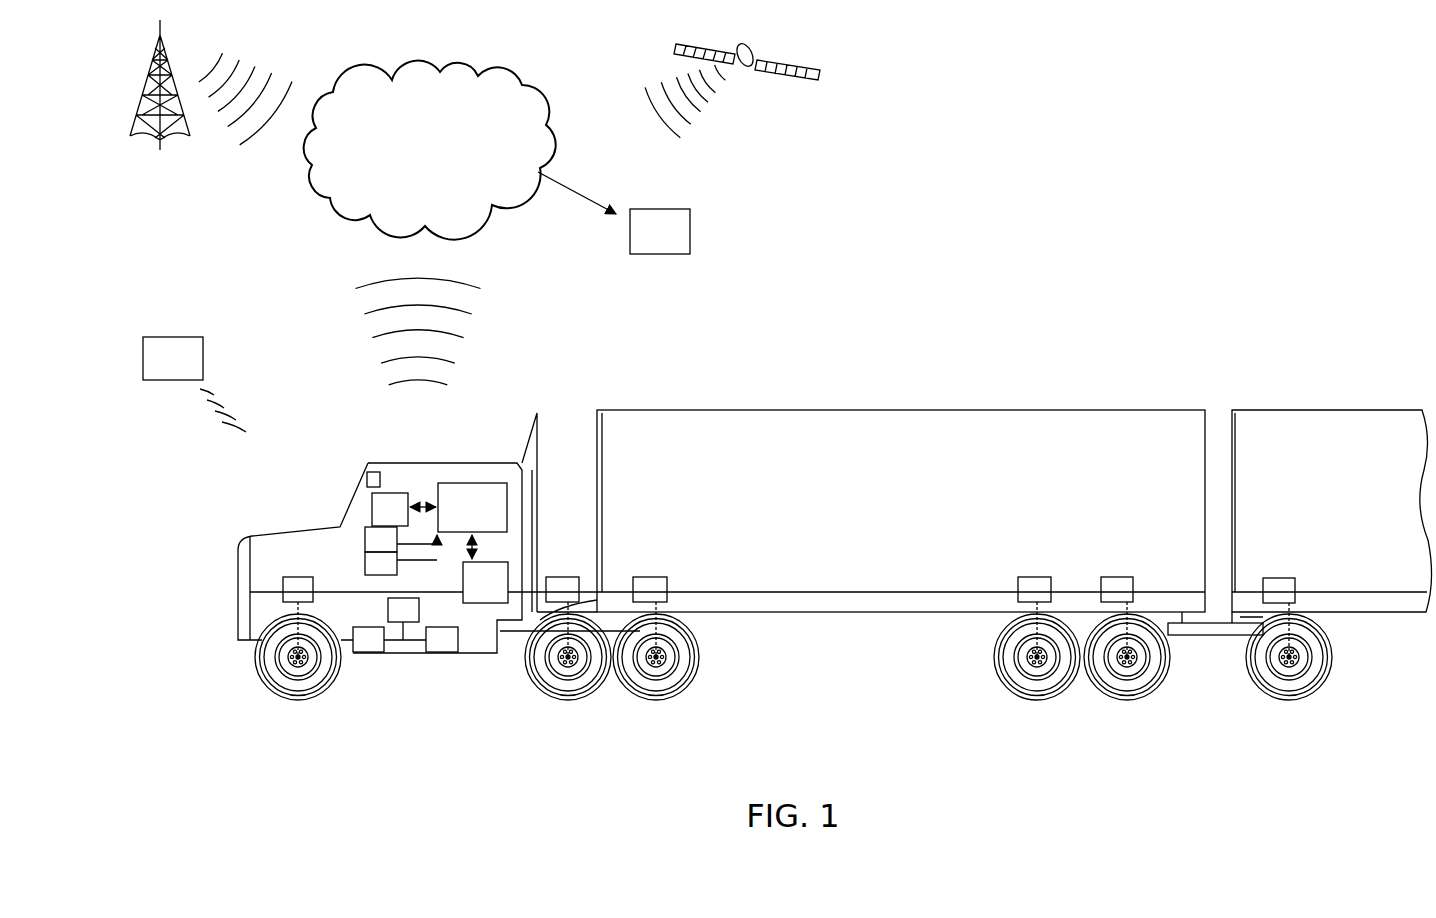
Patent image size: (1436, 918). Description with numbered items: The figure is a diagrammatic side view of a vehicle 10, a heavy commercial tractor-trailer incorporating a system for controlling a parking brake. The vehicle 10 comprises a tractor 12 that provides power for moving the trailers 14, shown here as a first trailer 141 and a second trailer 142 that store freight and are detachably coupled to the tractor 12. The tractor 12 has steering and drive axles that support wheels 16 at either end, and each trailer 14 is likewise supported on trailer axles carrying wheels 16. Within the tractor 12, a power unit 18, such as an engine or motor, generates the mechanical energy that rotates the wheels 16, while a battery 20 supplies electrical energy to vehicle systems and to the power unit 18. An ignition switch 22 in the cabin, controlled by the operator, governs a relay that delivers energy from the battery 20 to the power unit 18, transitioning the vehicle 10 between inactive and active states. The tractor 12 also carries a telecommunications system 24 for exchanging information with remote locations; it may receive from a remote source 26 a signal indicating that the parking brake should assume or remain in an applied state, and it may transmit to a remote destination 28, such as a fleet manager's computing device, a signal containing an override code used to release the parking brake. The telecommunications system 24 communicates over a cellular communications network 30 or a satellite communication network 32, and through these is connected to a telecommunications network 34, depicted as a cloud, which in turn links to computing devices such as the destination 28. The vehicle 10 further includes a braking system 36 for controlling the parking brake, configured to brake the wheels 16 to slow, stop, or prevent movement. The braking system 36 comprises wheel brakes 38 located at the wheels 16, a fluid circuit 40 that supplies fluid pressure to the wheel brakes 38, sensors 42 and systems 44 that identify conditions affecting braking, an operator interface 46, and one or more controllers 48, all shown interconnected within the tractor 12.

The vehicle 10 is at (370, 430).
The tractor 12 is at (273, 533).
The trailer 14 is at (1014, 519).
The first trailer 141 is at (705, 428).
The second trailer 142 is at (1305, 428).
The wheel 16 is at (317, 674).
The power unit 18 is at (440, 647).
The battery 20 is at (372, 645).
The ignition switch 22 is at (405, 612).
The telecommunications system 24 is at (367, 478).
The source 26 is at (142, 350).
The destination 28 is at (683, 243).
The cellular communications network 30 is at (146, 98).
The satellite communication network 32 is at (756, 59).
The telecommunications network 34 is at (345, 187).
The braking system 36 is at (549, 511).
The wheel brake 38 is at (283, 587).
The fluid circuit 40 is at (487, 606).
The sensor 42 is at (378, 538).
The system 44 is at (378, 567).
The operator interface 46 is at (396, 491).
The controller 48 is at (472, 483).